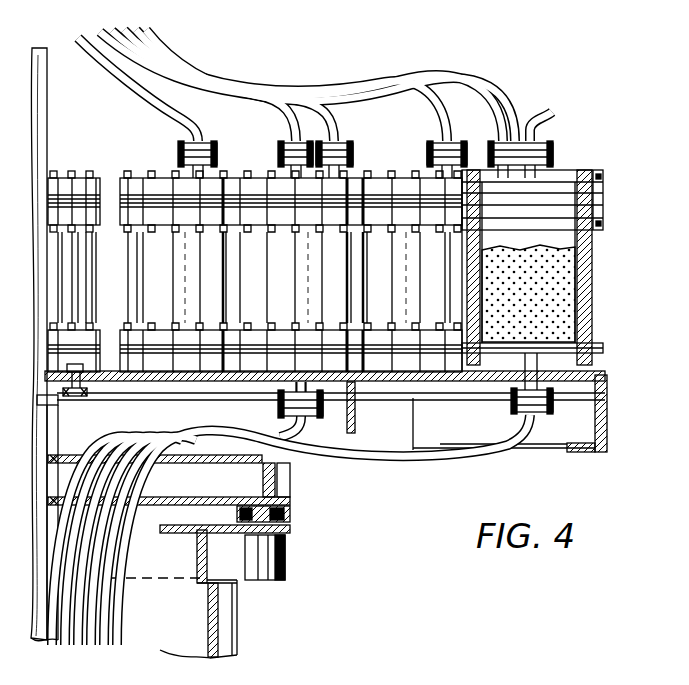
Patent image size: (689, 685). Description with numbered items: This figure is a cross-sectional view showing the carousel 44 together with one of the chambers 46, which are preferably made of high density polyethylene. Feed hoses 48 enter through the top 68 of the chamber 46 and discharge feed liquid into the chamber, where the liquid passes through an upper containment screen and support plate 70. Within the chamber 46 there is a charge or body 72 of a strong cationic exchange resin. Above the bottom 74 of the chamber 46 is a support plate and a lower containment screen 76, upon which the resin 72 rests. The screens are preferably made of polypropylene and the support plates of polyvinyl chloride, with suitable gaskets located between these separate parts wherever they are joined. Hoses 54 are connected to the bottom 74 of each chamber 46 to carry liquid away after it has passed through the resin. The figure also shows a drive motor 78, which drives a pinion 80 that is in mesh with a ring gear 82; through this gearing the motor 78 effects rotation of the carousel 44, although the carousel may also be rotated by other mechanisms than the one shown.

The carousel 44 is at (606, 450).
The chamber 46 is at (592, 262).
The feed hoses 48 is at (552, 116).
The hoses 54 is at (372, 466).
The top 68 is at (568, 170).
The upper containment screen and support plate 70 is at (585, 228).
The body of cationic exchange resin 72 is at (560, 292).
The bottom 74 is at (593, 383).
The support plate and lower containment screen 76 is at (566, 346).
The drive motor 78 is at (286, 553).
The pinion 80 is at (286, 524).
The ring gear 82 is at (248, 500).